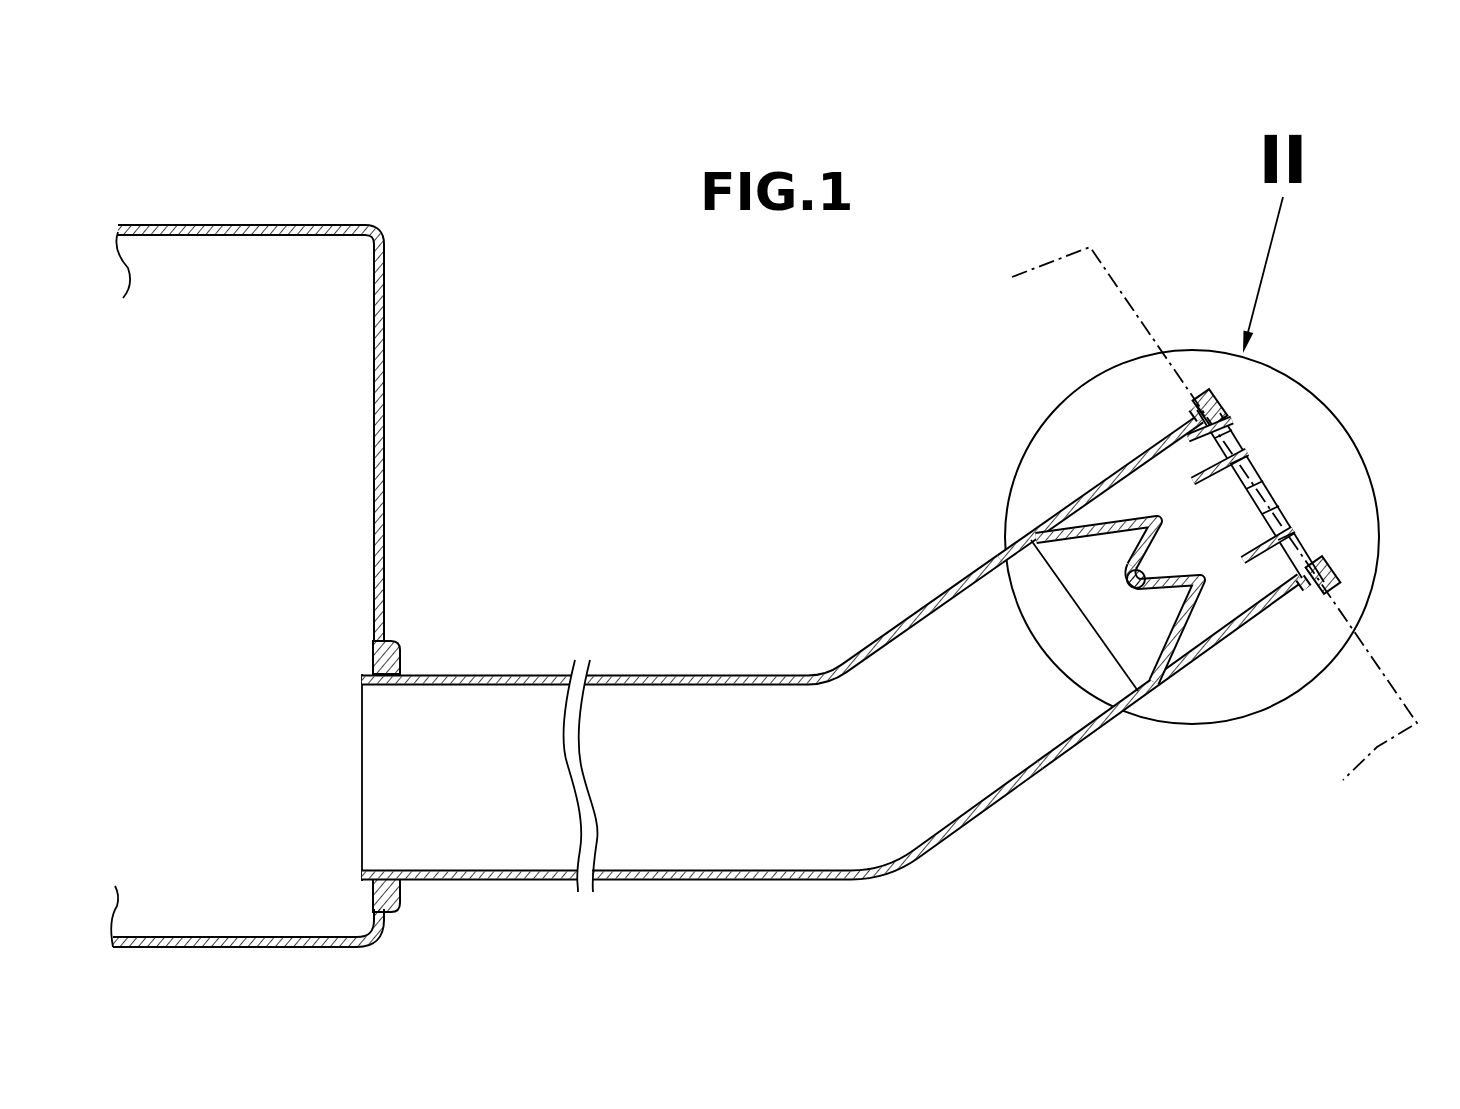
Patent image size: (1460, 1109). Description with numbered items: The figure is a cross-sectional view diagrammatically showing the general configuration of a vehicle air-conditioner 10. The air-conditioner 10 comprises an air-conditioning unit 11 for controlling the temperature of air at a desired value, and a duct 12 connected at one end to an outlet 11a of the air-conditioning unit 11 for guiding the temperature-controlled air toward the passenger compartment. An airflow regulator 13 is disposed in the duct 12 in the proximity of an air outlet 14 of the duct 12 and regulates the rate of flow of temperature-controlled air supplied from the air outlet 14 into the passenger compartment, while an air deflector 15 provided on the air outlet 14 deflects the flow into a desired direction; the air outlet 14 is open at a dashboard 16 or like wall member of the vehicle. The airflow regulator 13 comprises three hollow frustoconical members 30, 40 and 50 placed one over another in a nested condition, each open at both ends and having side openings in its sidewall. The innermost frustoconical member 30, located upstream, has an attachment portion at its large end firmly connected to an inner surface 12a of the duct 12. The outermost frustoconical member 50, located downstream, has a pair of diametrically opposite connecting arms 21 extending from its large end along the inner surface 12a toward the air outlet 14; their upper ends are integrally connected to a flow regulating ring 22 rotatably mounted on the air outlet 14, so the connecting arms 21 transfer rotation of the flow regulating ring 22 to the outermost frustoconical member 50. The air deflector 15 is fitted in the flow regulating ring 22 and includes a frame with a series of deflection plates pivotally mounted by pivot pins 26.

The air-conditioner 10 is at (534, 262).
The air-conditioning unit 11 is at (211, 215).
The outlet 11a is at (400, 668).
The duct 12 is at (650, 677).
The inner surface 12a is at (985, 566).
The airflow regulator 13 is at (1090, 490).
The air outlet 14 is at (1322, 535).
The air deflector 15 is at (1250, 455).
The dashboard 16 is at (1347, 610).
The connecting arms 21 is at (1140, 452).
The flow regulating ring 22 is at (1225, 395).
The pivot pins 26 is at (1283, 445).
The innermost frustoconical member 30 is at (1200, 620).
The frustoconical member 40 is at (1218, 625).
The outermost frustoconical member 50 is at (1245, 605).